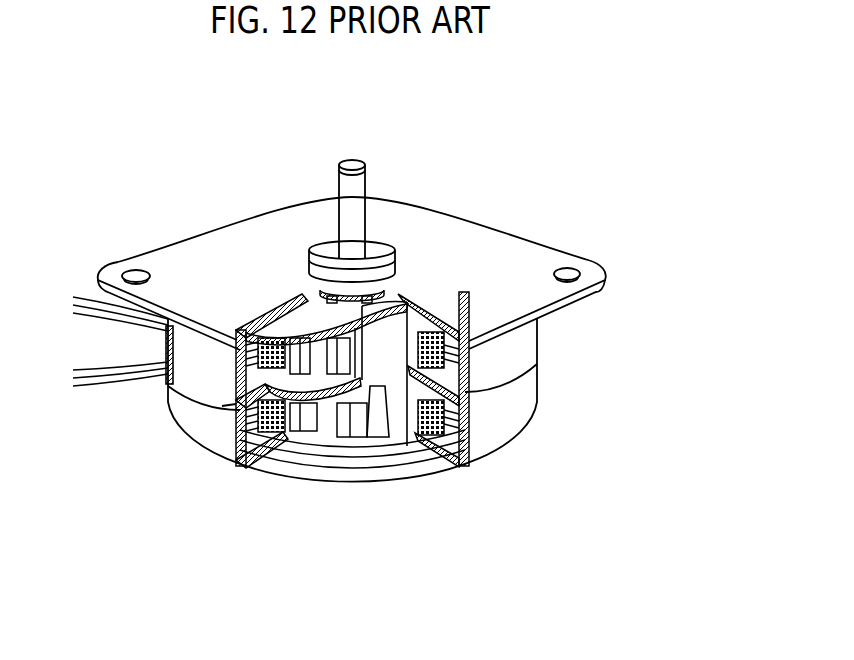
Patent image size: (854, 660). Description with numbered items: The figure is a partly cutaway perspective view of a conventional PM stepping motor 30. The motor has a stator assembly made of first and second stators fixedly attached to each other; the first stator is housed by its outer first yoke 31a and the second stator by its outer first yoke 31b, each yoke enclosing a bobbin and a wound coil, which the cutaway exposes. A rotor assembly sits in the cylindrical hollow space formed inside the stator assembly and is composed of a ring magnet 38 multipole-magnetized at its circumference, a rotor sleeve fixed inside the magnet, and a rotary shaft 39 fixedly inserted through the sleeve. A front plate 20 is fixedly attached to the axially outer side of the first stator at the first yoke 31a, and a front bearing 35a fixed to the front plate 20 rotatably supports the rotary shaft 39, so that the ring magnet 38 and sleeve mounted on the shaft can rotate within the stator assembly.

The front plate 20 is at (476, 233).
The PM stepping motor 30 is at (571, 189).
The first yoke of the first stator 31a is at (527, 342).
The first yoke of the second stator 31b is at (527, 395).
The front bearing 35a is at (318, 248).
The ring magnet 38 is at (390, 417).
The rotary shaft 39 is at (360, 183).